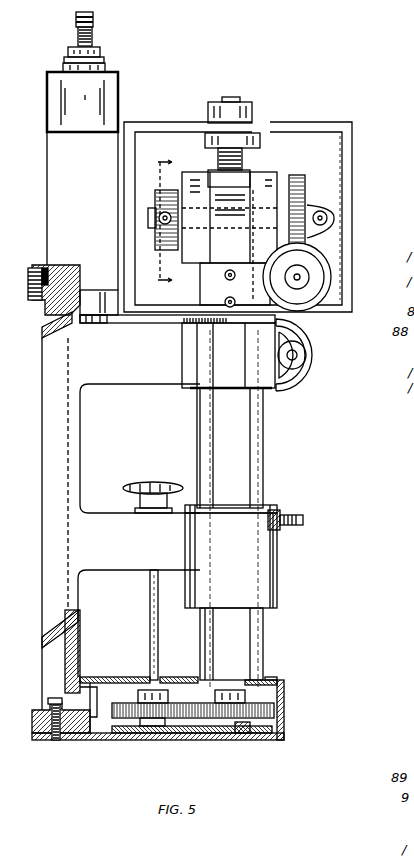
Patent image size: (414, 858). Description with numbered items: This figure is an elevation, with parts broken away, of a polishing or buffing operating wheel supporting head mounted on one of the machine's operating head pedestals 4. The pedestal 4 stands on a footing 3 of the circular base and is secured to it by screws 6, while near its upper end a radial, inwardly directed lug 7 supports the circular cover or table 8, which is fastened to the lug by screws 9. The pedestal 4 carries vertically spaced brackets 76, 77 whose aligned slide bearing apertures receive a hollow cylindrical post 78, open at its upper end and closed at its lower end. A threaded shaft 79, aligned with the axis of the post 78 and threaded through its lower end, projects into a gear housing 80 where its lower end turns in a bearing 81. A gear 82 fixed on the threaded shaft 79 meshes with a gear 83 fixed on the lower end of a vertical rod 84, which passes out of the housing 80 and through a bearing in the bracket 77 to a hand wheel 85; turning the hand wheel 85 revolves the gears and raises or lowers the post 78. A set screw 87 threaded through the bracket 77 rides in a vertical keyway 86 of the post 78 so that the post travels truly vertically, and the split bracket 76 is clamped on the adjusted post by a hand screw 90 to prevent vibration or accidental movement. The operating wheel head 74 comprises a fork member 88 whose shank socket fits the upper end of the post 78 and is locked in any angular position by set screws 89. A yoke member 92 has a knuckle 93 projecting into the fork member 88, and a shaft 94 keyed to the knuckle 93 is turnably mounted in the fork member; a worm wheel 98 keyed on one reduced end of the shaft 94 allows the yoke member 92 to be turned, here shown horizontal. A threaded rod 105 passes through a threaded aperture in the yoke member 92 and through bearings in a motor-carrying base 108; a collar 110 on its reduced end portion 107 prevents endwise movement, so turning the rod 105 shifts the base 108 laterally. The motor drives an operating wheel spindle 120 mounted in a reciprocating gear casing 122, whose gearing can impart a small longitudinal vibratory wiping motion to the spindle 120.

The footing 3 is at (76, 742).
The operating head pedestal 4 is at (82, 410).
The screw 6 is at (56, 742).
The lug 7 is at (53, 487).
The table 8 is at (46, 265).
The screw 9 is at (35, 268).
The operating wheel head 74 is at (216, 206).
The bracket 76 is at (168, 386).
The bracket 77 is at (278, 576).
The post 78 is at (265, 478).
The threaded shaft 79 is at (284, 694).
The gear housing 80 is at (285, 701).
The bearing 81 is at (248, 735).
The gear 82 is at (273, 716).
The gear 83 is at (140, 730).
The vertical rod 84 is at (148, 650).
The hand wheel 85 is at (160, 484).
The keyway 86 is at (262, 634).
The set screw 87 is at (303, 518).
The fork member 88 is at (197, 172).
The set screw 89 is at (225, 302).
The hand screw 90 is at (323, 364).
The yoke member 92 is at (256, 172).
The knuckle 93 is at (249, 187).
The shaft 94 is at (256, 190).
The worm wheel 98 is at (306, 177).
The threaded rod 105 is at (236, 97).
The end portion 107 is at (236, 97).
The base 108 is at (353, 143).
The collar 110 is at (252, 133).
The operating wheel spindle 120 is at (98, 38).
The reciprocating gear casing 122 is at (120, 90).